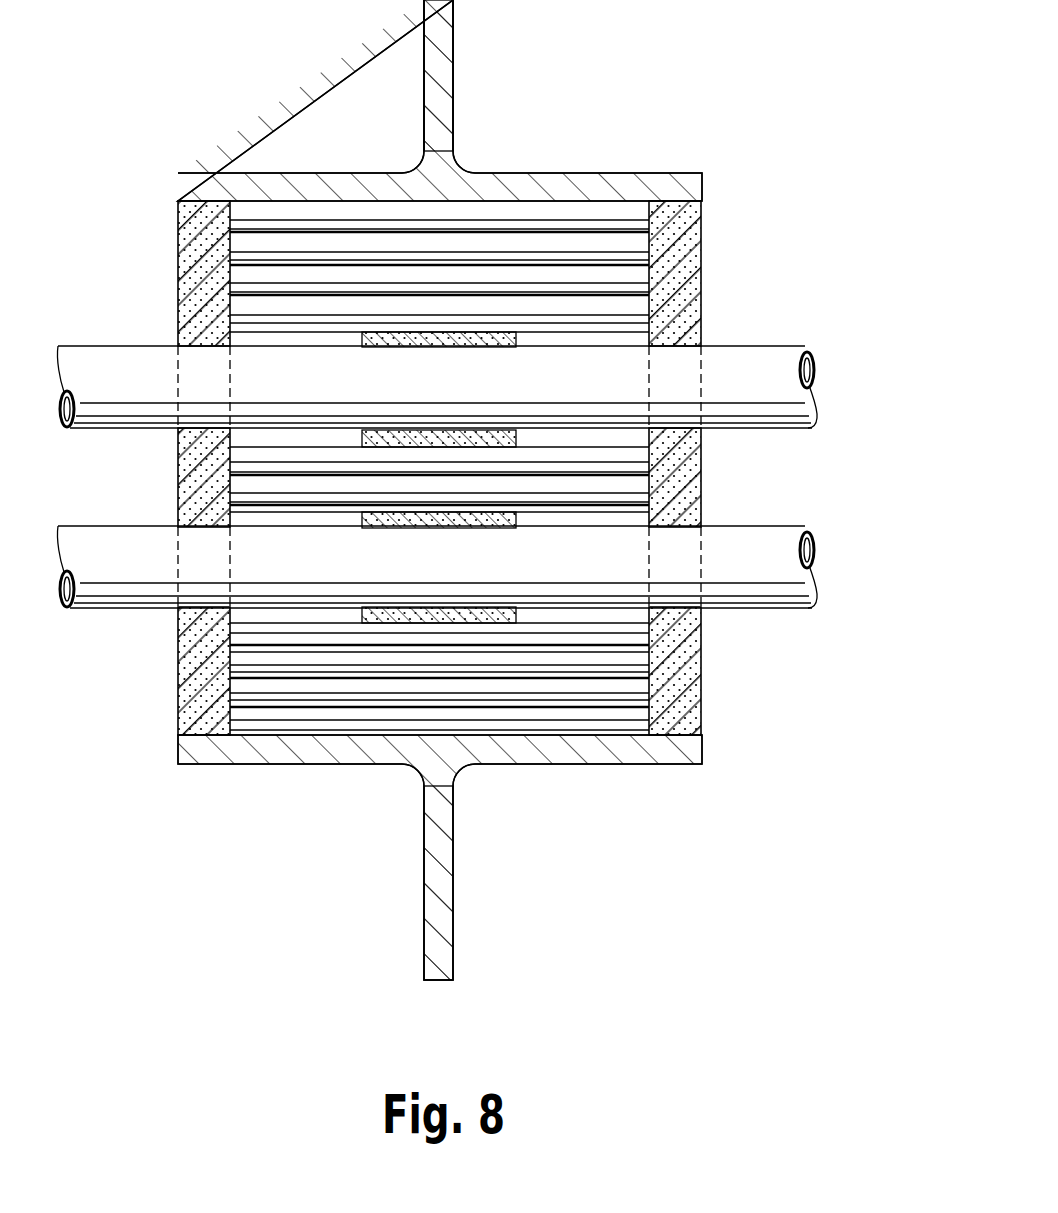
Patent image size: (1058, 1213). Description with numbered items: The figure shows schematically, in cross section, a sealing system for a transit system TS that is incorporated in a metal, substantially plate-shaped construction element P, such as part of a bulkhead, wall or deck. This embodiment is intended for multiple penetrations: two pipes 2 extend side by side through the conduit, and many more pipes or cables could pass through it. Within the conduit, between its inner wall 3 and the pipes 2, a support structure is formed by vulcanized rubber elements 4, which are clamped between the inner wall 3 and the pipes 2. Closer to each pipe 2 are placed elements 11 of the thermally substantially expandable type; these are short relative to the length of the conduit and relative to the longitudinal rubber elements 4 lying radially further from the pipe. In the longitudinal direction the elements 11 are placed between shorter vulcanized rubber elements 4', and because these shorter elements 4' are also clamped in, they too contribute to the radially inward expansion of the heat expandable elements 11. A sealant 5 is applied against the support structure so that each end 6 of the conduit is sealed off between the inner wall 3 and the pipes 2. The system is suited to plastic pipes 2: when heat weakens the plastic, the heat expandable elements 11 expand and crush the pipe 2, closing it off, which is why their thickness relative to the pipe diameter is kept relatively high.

The pipe 2 is at (778, 378).
The inner wall 3 is at (297, 204).
The rubber element 4 is at (439, 416).
The shorter vulcanized rubber element 4' is at (349, 479).
The sealant 5 is at (672, 290).
The end 6 is at (180, 736).
The heat expandable element 11 is at (485, 340).
The plate-shaped construction element P is at (437, 32).
The transit system TS is at (630, 117).